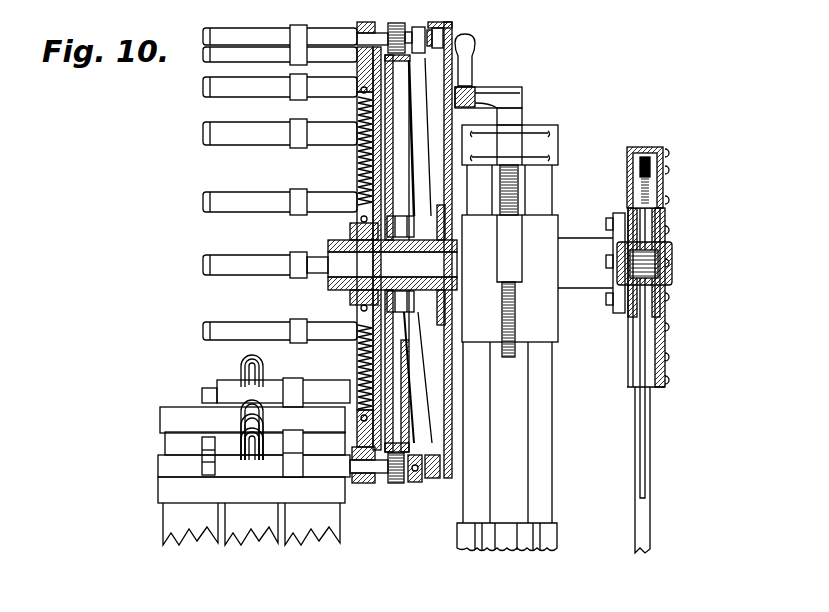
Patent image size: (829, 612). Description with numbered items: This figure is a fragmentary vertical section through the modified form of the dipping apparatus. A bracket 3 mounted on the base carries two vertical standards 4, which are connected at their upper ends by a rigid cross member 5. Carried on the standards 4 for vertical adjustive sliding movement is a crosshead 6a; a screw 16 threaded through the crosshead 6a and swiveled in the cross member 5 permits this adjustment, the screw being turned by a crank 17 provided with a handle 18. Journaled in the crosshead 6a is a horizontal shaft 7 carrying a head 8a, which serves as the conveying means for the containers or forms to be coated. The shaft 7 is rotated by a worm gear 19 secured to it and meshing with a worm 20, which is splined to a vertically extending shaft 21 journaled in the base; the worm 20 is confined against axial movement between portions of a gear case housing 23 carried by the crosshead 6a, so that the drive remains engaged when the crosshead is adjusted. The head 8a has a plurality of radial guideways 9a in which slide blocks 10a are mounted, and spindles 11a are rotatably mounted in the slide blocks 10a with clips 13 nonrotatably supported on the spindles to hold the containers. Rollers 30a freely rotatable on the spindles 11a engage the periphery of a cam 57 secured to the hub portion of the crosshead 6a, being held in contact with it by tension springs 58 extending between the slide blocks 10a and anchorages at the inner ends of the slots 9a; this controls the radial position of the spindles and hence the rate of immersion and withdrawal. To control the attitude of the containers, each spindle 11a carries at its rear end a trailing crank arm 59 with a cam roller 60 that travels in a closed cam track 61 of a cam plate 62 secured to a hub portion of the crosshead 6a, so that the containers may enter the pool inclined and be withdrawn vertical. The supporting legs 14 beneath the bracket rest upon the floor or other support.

The bracket 3 is at (547, 533).
The standards 4 is at (535, 393).
The cross member 5 is at (550, 143).
The crosshead 6a is at (545, 230).
The shaft 7 is at (430, 263).
The head 8a is at (348, 230).
The radial guideways 9a is at (357, 205).
The slide blocks 10a is at (365, 24).
The spindles 11a is at (205, 134).
The clips 13 is at (230, 467).
The legs 14 is at (177, 533).
The screw 16 is at (507, 318).
The crank 17 is at (485, 97).
The handle 18 is at (465, 45).
The worm gear 19 is at (640, 168).
The worm 20 is at (660, 263).
The vertically extending shaft 21 is at (643, 513).
The gear case housing 23 is at (647, 147).
The rollers 30a is at (398, 24).
The cam 57 is at (523, 362).
The tension springs 58 is at (357, 107).
The trailing crank arm 59 is at (413, 484).
The cam roller 60 is at (483, 17).
The cam track 61 is at (433, 480).
The cam plate 62 is at (447, 437).